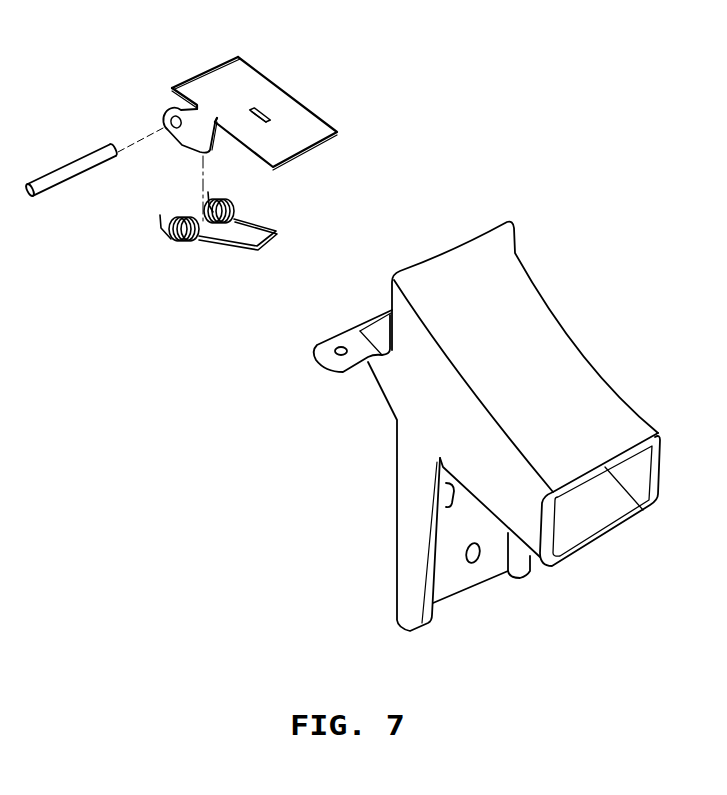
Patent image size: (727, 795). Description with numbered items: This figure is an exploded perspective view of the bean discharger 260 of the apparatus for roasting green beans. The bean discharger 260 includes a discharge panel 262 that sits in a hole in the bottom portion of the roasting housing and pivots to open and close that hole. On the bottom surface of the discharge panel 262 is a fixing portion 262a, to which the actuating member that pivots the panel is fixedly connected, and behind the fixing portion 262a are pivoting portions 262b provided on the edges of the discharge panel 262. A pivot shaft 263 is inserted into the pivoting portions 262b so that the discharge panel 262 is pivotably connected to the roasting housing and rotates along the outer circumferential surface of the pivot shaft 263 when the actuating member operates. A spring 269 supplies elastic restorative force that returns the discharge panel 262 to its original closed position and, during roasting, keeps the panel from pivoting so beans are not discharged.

The bean discharger 260 is at (582, 300).
The discharge panel 262 is at (308, 127).
The fixing portion 262a is at (257, 102).
The pivoting portions 262b is at (163, 117).
The pivot shaft 263 is at (73, 168).
The spring 269 is at (273, 245).